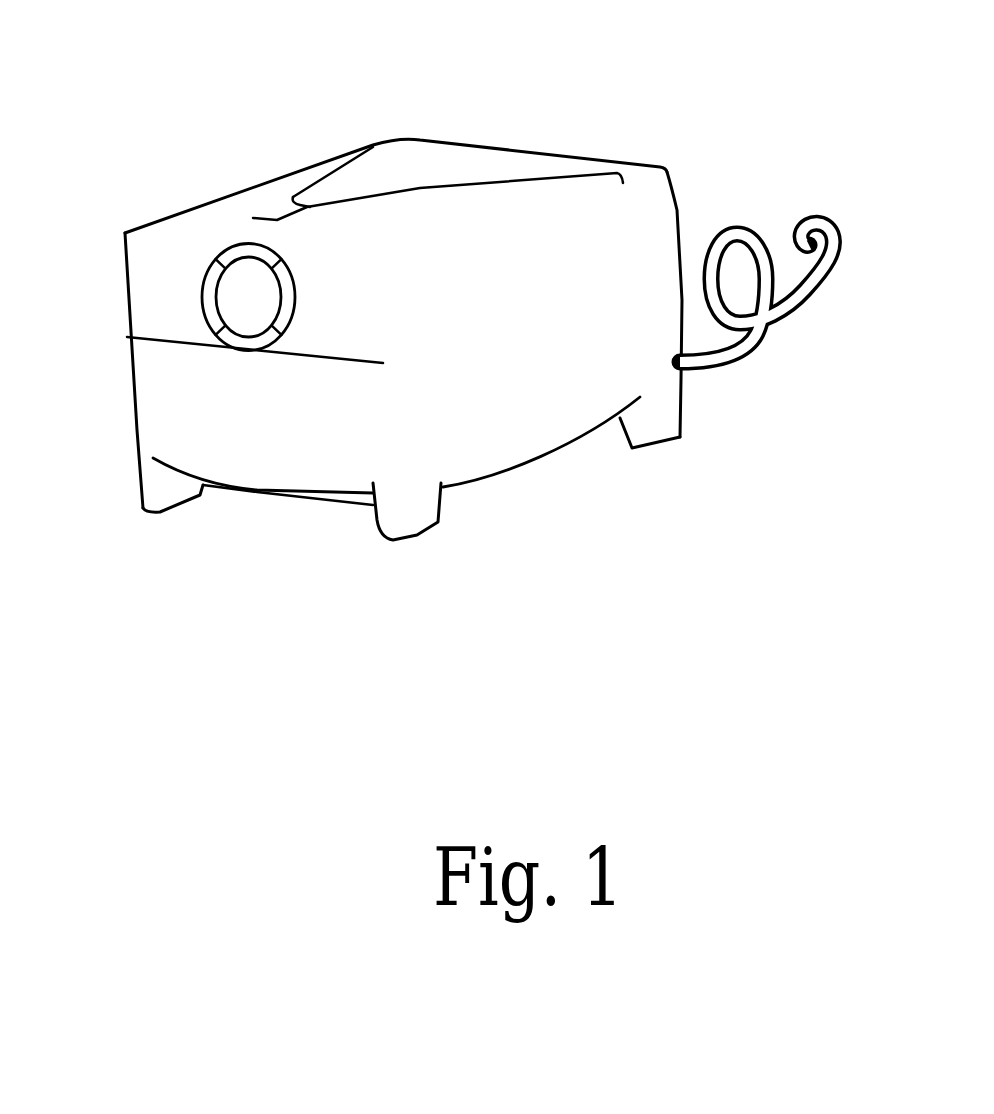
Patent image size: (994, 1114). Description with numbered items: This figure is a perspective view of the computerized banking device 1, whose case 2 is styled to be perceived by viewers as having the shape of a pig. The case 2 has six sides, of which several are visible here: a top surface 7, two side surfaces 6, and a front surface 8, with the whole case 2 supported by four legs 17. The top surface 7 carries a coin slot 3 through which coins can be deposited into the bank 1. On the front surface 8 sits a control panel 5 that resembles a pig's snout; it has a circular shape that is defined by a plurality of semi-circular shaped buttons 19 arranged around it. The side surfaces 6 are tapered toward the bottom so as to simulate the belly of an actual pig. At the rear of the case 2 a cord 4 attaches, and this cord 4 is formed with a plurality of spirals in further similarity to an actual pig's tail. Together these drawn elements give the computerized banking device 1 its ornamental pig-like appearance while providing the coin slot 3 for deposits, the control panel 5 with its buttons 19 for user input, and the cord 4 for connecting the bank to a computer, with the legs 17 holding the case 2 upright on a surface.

The computerized banking device 1 is at (556, 28).
The case 2 is at (661, 162).
The coin slot 3 is at (276, 215).
The cord 4 is at (753, 350).
The control panel 5 is at (298, 313).
The side surfaces 6 is at (543, 360).
The top surface 7 is at (227, 217).
The front surface 8 is at (262, 442).
The legs 17 is at (155, 500).
The semi-circular shaped buttons 19 is at (215, 285).